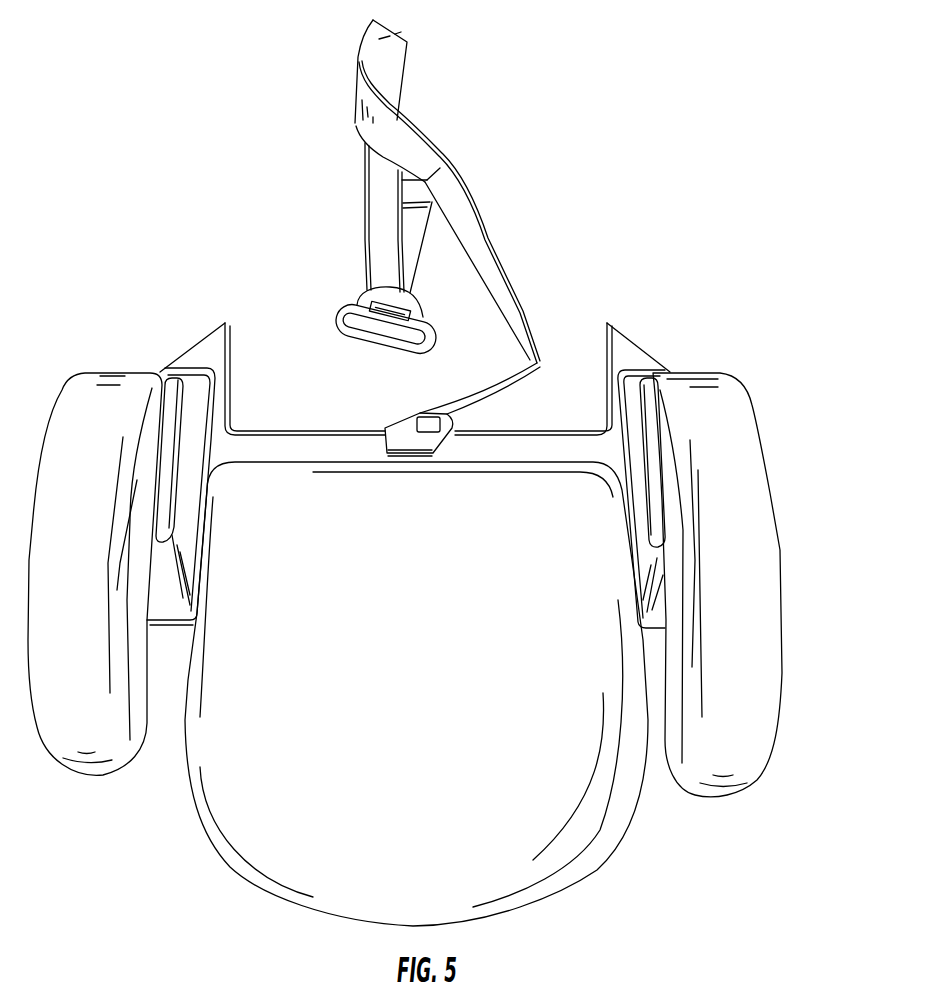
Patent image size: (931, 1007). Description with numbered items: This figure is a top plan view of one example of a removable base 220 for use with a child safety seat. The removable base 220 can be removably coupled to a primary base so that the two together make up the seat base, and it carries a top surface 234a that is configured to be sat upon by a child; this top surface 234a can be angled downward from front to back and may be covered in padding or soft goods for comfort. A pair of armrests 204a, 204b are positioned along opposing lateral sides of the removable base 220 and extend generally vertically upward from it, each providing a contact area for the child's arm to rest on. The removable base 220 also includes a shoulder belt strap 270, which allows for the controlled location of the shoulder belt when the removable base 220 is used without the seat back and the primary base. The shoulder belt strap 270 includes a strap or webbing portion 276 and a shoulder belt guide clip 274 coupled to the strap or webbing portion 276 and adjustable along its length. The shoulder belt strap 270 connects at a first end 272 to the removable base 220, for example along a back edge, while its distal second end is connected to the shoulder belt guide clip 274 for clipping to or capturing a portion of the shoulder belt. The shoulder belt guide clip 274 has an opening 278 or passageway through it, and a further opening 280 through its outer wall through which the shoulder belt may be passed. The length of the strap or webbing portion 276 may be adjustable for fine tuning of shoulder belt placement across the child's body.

The shoulder belt strap 270 is at (465, 97).
The first end 272 is at (385, 420).
The shoulder belt guide clip 274 is at (356, 288).
The strap or webbing portion 276 is at (478, 250).
The opening 278 is at (357, 318).
The opening 280 is at (385, 337).
The armrest 204a is at (87, 668).
The armrest 204b is at (762, 492).
The removable base 220 is at (572, 870).
The top surface 234a is at (438, 625).